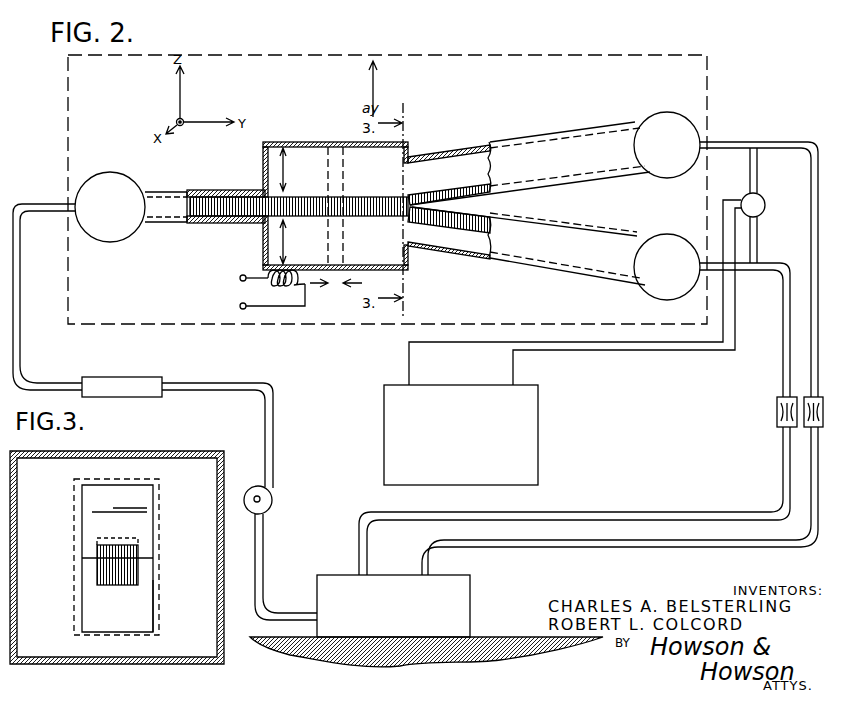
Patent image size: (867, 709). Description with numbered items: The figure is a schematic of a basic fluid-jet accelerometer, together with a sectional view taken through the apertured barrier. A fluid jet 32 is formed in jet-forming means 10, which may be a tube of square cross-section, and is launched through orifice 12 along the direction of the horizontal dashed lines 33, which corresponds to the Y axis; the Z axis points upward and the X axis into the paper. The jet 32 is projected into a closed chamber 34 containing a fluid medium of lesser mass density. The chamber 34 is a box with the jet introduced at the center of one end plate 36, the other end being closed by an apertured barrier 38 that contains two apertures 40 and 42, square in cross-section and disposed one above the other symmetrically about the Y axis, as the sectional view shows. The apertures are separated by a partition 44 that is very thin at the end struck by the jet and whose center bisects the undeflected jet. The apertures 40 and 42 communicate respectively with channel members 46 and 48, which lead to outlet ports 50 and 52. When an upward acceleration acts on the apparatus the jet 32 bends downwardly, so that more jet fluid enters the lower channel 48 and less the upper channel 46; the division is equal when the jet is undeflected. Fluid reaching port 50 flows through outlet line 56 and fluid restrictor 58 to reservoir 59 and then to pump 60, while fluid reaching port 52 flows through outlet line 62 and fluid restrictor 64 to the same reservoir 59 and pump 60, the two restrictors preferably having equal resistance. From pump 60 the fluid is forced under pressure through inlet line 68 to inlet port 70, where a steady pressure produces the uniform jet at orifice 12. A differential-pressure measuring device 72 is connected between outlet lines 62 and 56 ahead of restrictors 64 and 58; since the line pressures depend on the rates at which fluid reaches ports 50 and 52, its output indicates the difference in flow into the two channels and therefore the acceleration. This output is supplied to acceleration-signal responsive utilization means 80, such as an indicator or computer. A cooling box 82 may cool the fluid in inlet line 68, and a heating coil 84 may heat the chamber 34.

In FIG. 2, the jet-forming means 10 is at (184, 226).
In FIG. 2, the orifice 12 is at (271, 218).
In FIG. 2, the fluid jet 32 is at (364, 217).
In FIG. 3, the fluid jet 32 is at (100, 585).
In FIG. 2, the horizontal dashed lines 33 is at (386, 195).
In FIG. 3, the horizontal dashed lines 33 is at (125, 537).
In FIG. 2, the closed chamber 34 is at (310, 142).
In FIG. 3, the closed chamber 34 is at (140, 452).
In FIG. 2, the end plate 36 is at (263, 178).
In FIG. 2, the apertured barrier 38 is at (411, 152).
In FIG. 3, the apertured barrier 38 is at (193, 465).
In FIG. 2, the upper aperture 40 is at (410, 165).
In FIG. 3, the upper aperture 40 is at (148, 517).
In FIG. 2, the lower aperture 42 is at (409, 250).
In FIG. 3, the lower aperture 42 is at (148, 600).
In FIG. 2, the partition 44 is at (440, 196).
In FIG. 3, the partition 44 is at (95, 557).
In FIG. 2, the upper channel member 46 is at (545, 141).
In FIG. 3, the upper channel member 46 is at (90, 495).
In FIG. 2, the lower channel member 48 is at (536, 269).
In FIG. 3, the lower channel member 48 is at (88, 618).
In FIG. 2, the outlet port 50 is at (665, 112).
In FIG. 2, the outlet port 52 is at (649, 285).
In FIG. 2, the outlet line 56 is at (730, 142).
In FIG. 2, the fluid restrictor 58 is at (808, 396).
In FIG. 2, the reservoir 59 is at (472, 587).
In FIG. 2, the pump 60 is at (273, 501).
In FIG. 2, the outlet line 62 is at (718, 262).
In FIG. 2, the fluid restrictor 64 is at (782, 396).
In FIG. 2, the inlet line 68 is at (18, 292).
In FIG. 2, the inlet port 70 is at (97, 173).
In FIG. 2, the differential-pressure measuring device 72 is at (762, 194).
In FIG. 2, the acceleration-signal responsive utilization means 80 is at (540, 428).
In FIG. 2, the cooling box 82 is at (163, 378).
In FIG. 2, the heating coil 84 is at (269, 287).